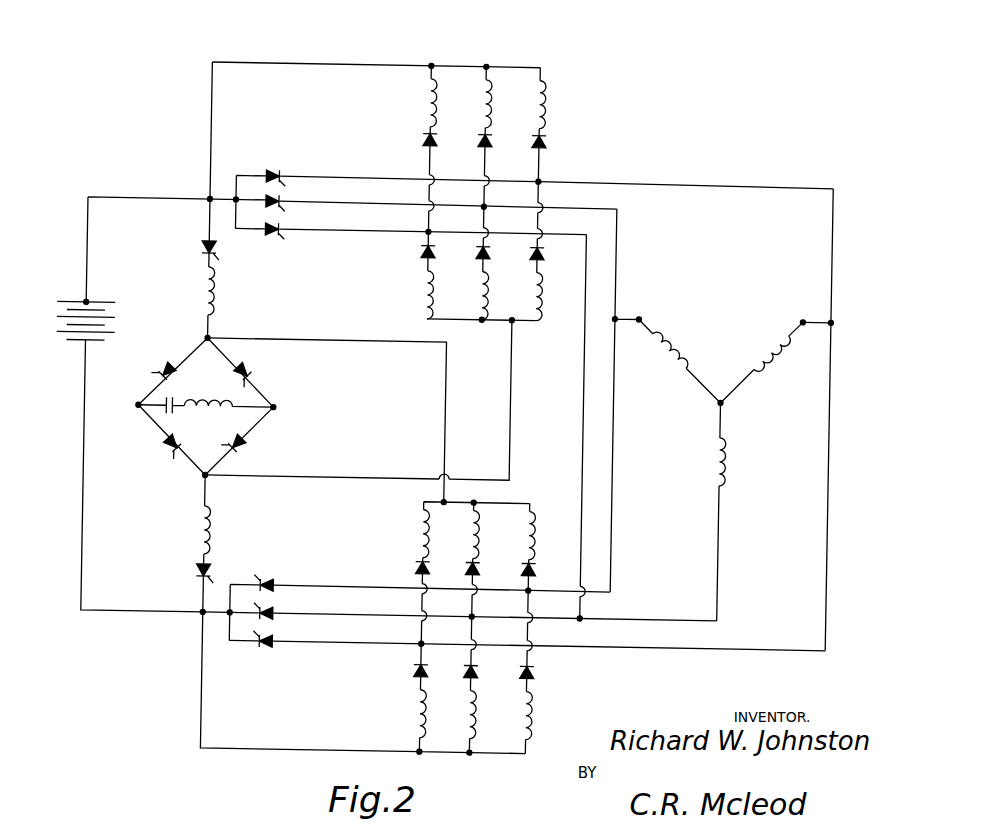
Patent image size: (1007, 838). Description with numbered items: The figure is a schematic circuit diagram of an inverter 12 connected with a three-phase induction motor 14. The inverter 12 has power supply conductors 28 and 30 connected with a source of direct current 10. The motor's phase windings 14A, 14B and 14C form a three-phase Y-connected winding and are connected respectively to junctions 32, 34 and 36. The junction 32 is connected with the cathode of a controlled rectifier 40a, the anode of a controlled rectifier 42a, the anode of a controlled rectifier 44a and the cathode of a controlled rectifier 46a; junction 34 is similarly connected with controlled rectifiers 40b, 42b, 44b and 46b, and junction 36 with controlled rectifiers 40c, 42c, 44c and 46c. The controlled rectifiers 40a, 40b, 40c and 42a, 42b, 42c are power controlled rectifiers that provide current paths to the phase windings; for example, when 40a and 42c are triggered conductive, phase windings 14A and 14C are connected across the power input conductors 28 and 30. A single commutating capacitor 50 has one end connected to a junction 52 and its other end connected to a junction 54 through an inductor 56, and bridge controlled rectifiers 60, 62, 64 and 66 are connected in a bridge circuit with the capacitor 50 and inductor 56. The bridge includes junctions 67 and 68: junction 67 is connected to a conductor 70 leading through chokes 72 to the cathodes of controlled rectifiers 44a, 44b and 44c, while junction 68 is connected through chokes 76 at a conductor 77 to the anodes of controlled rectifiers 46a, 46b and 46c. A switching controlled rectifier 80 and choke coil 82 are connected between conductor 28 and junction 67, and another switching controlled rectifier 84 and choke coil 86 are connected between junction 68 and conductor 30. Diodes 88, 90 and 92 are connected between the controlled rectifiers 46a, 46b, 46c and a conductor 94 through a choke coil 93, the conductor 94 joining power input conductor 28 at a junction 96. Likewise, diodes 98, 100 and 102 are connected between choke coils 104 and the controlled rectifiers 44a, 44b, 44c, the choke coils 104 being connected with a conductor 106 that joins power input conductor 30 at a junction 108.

The source of direct current 10 is at (96, 304).
The inverter 12 is at (190, 706).
The induction motor 14 is at (726, 459).
The phase winding 14A is at (670, 334).
The phase winding 14B is at (772, 356).
The phase winding 14C is at (732, 462).
The power supply conductor 28 is at (118, 199).
The power supply conductor 30 is at (110, 612).
The junction 32 is at (617, 310).
The junction 34 is at (833, 310).
The junction 36 is at (592, 612).
The controlled rectifier 40a is at (286, 199).
The controlled rectifier 40b is at (272, 170).
The controlled rectifier 40c is at (278, 236).
The controlled rectifier 42a is at (283, 582).
The controlled rectifier 42b is at (274, 646).
The controlled rectifier 42c is at (288, 611).
The controlled rectifier 44a is at (541, 574).
The controlled rectifier 44b is at (424, 568).
The controlled rectifier 44c is at (484, 572).
The controlled rectifier 46a is at (480, 258).
The controlled rectifier 46b is at (532, 258).
The controlled rectifier 46c is at (420, 250).
The commutating capacitor 50 is at (178, 402).
The junction 52 is at (140, 408).
The junction 54 is at (279, 404).
The inductor 56 is at (200, 410).
The bridge controlled rectifier 60 is at (174, 365).
The bridge controlled rectifier 62 is at (248, 444).
The bridge controlled rectifier 64 is at (254, 366).
The bridge controlled rectifier 66 is at (172, 450).
The junction 67 is at (218, 338).
The junction 68 is at (214, 478).
The conductor 70 is at (330, 338).
The chokes 72 is at (474, 528).
The chokes 76 is at (482, 296).
The conductor 77 is at (318, 475).
The switching controlled rectifier 80 is at (205, 243).
The choke coil 82 is at (216, 292).
The switching controlled rectifier 84 is at (216, 572).
The choke coil 86 is at (205, 528).
The diode 88 is at (421, 141).
The diode 90 is at (480, 143).
The diode 92 is at (534, 143).
The choke coil 93 is at (476, 100).
The conductor 94 is at (358, 62).
The junction 96 is at (210, 199).
The diode 98 is at (421, 669).
The diode 100 is at (472, 671).
The diode 102 is at (543, 669).
The choke coils 104 is at (470, 722).
The conductor 106 is at (300, 748).
The junction 108 is at (208, 614).